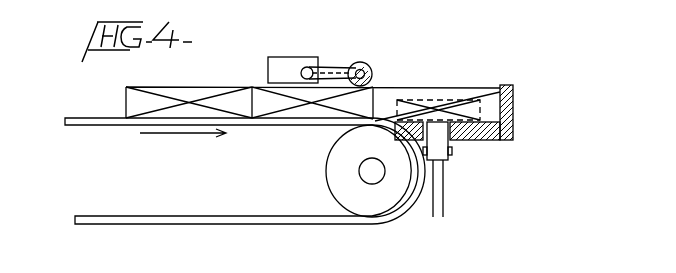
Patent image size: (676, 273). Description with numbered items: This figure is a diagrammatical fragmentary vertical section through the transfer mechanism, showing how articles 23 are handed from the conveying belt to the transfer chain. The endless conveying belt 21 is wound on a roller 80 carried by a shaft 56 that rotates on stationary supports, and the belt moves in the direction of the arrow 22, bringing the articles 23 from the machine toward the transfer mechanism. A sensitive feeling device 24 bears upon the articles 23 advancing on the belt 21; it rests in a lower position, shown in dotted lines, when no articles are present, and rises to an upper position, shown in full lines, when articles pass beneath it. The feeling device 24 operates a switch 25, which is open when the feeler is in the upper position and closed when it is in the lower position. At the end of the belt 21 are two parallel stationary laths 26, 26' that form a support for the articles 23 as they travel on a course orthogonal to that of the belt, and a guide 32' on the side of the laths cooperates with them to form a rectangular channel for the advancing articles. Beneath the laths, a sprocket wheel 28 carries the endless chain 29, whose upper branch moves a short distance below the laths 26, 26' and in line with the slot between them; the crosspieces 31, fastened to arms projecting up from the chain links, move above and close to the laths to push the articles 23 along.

The endless conveying belt 21 is at (75, 118).
The arrow 22 is at (183, 146).
The articles 23 is at (152, 91).
The sensitive feeling device 24 is at (372, 74).
The switch 25 is at (278, 63).
The stationary lath 26 is at (474, 117).
The stationary lath 26' is at (490, 121).
The sprocket wheel 28 is at (443, 200).
The endless chain 29 is at (438, 150).
The crosspiece 31 is at (463, 93).
The guide 32' is at (490, 115).
The shaft 56 is at (368, 181).
The roller 80 is at (334, 184).